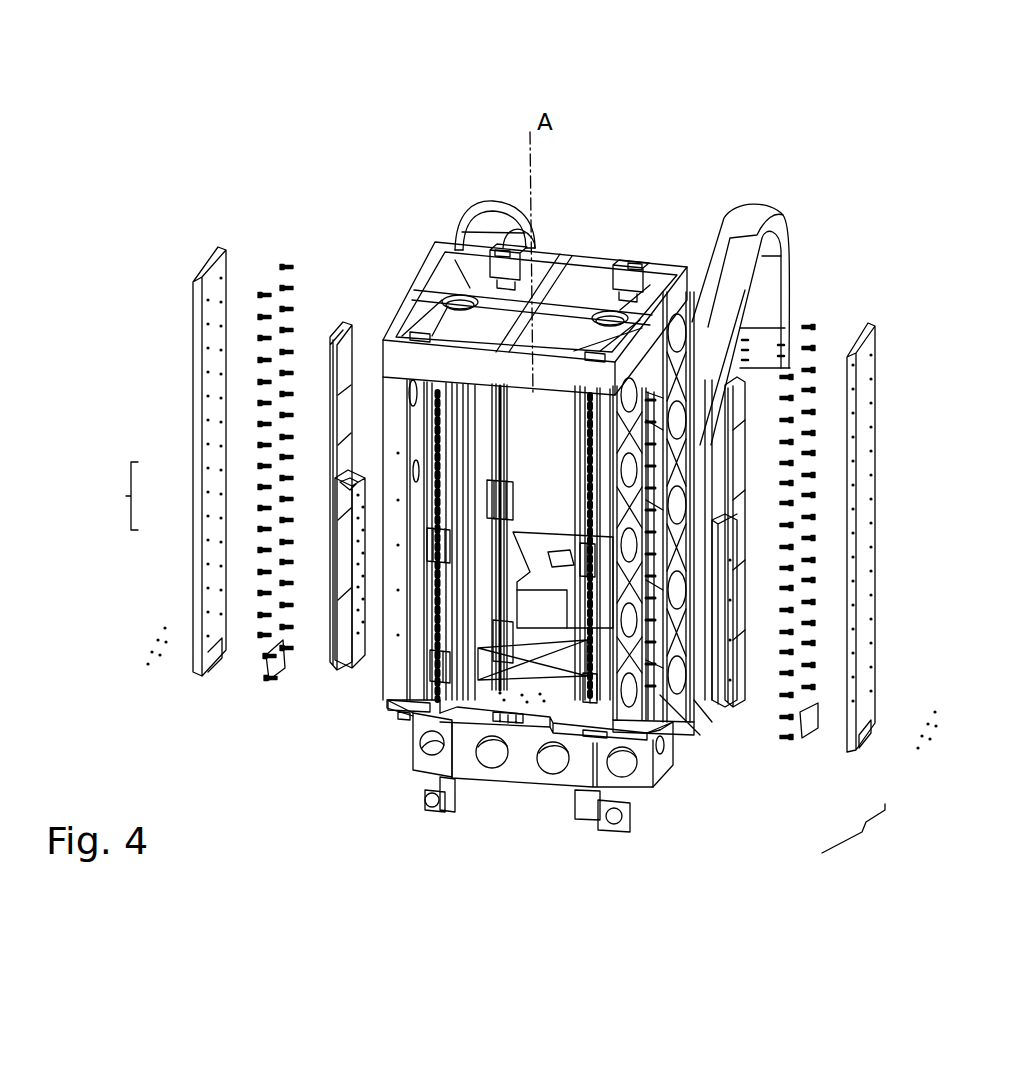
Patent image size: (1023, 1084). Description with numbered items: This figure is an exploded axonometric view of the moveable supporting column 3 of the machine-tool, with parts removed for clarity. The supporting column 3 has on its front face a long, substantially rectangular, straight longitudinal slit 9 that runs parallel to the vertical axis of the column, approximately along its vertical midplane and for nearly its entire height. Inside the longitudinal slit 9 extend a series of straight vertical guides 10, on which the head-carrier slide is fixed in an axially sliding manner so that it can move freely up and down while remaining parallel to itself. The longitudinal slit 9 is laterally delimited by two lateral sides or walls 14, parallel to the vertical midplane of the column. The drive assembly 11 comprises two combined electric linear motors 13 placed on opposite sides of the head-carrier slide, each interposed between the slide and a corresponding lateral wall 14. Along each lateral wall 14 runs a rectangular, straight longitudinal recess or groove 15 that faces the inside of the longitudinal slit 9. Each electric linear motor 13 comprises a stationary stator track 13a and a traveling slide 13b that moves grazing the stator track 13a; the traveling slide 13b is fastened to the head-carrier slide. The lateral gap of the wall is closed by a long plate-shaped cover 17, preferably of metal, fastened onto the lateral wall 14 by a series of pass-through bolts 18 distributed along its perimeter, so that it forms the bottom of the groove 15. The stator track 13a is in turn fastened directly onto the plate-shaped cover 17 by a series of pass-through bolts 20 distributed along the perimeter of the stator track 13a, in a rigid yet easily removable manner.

The supporting column 3 is at (567, 265).
The longitudinal slit 9 is at (507, 688).
The straight vertical guides 10 is at (462, 428).
The drive assembly 11 is at (713, 453).
The electric linear motor 13 is at (494, 661).
The stator track 13a is at (330, 463).
The traveling slide 13b is at (345, 540).
The lateral side or wall 14 is at (433, 258).
The longitudinal recess or groove 15 is at (531, 400).
The plate-shaped cover 17 is at (197, 351).
The pass-through bolts 18 is at (287, 267).
The pass-through bolts 20 is at (656, 612).